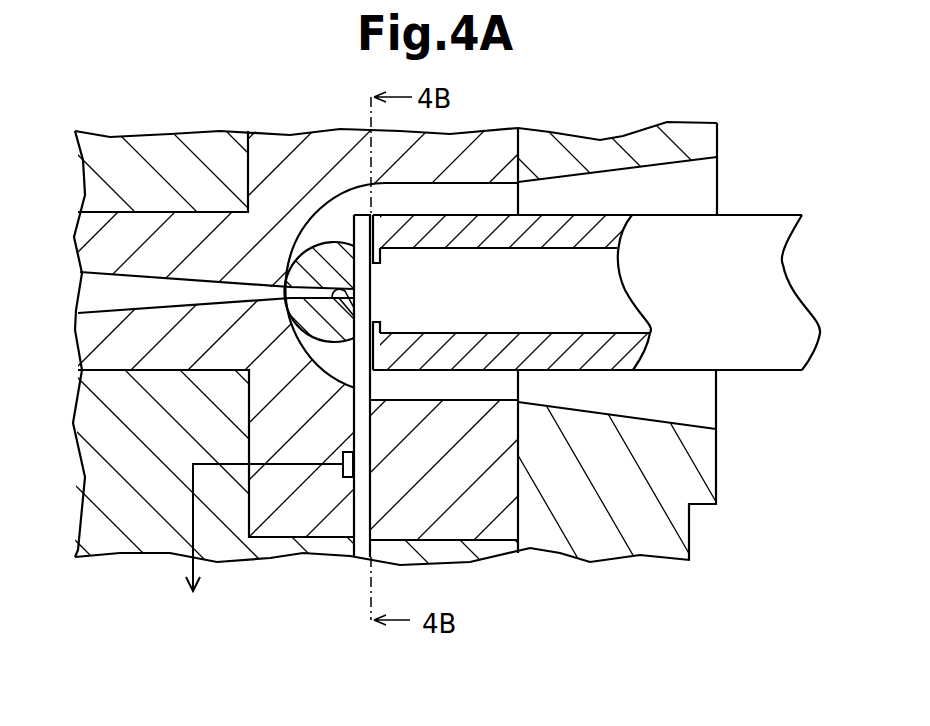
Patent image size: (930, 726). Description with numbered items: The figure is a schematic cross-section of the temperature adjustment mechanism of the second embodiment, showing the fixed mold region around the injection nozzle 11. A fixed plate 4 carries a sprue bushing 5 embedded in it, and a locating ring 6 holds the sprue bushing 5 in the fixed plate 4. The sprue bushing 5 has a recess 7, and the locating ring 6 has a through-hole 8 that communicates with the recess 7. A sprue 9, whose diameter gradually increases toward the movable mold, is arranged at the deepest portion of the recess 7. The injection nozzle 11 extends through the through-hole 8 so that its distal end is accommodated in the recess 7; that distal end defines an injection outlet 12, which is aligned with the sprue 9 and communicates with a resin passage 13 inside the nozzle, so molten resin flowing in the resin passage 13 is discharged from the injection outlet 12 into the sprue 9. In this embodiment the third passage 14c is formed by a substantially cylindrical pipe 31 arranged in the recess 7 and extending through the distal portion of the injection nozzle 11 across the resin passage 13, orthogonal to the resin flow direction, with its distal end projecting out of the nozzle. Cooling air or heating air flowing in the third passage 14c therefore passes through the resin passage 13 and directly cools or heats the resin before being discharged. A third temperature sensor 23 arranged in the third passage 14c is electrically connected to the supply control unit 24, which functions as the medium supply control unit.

The fixed plate 4 is at (80, 466).
The sprue bushing 5 is at (331, 131).
The locating ring 6 is at (680, 128).
The recess 7 is at (471, 183).
The through-hole 8 is at (716, 160).
The sprue 9 is at (98, 279).
The injection nozzle 11 is at (775, 371).
The injection outlet 12 is at (343, 303).
The resin passage 13 is at (534, 249).
The third passage 14c is at (362, 556).
The third temperature sensor 23 is at (342, 460).
The supply control unit 24 is at (167, 610).
The pipe 31 is at (368, 270).